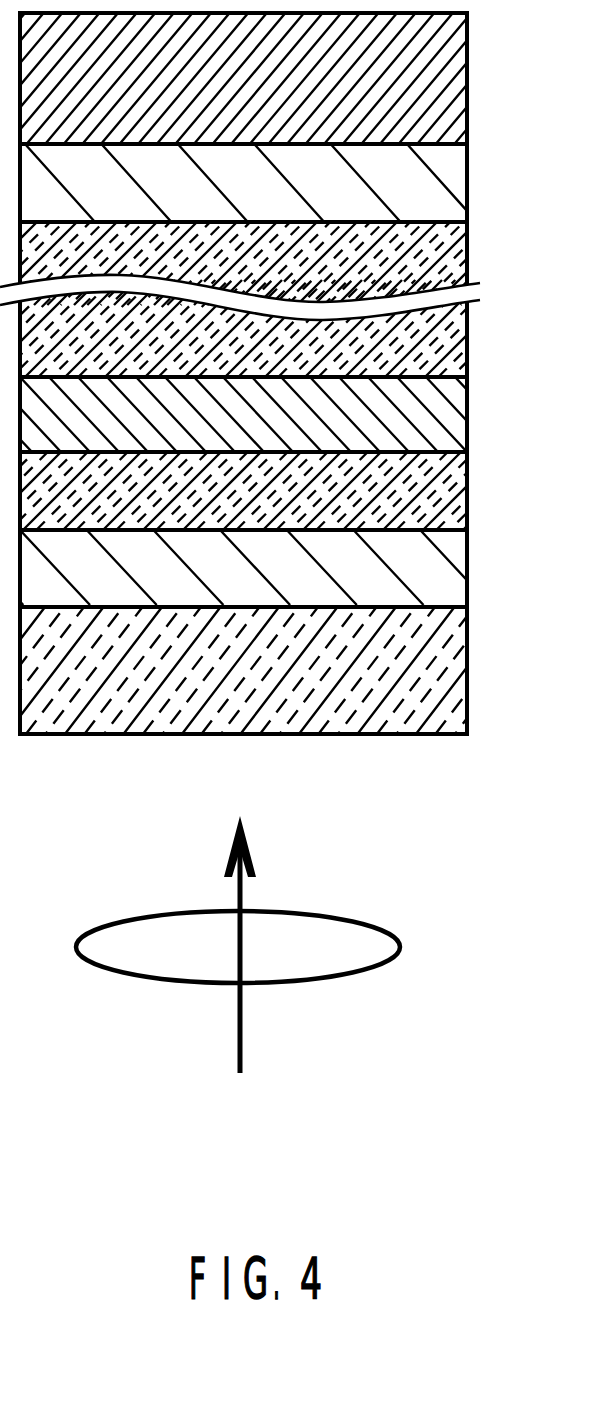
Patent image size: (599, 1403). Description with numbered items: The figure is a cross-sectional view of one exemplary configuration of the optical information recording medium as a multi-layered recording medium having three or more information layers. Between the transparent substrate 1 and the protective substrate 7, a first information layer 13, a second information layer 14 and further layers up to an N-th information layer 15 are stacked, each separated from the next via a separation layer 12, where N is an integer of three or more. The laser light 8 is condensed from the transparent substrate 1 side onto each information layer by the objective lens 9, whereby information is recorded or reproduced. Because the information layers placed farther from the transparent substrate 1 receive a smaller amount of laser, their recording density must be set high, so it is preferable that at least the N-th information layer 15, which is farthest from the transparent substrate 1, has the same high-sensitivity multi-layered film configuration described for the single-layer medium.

The transparent substrate 1 is at (467, 672).
The protective substrate 7 is at (467, 85).
The laser light 8 is at (242, 1048).
The objective lens 9 is at (400, 947).
The separation layer 12 is at (467, 263).
The first information layer 13 is at (467, 570).
The second information layer 14 is at (467, 415).
The N-th information layer 15 is at (467, 185).